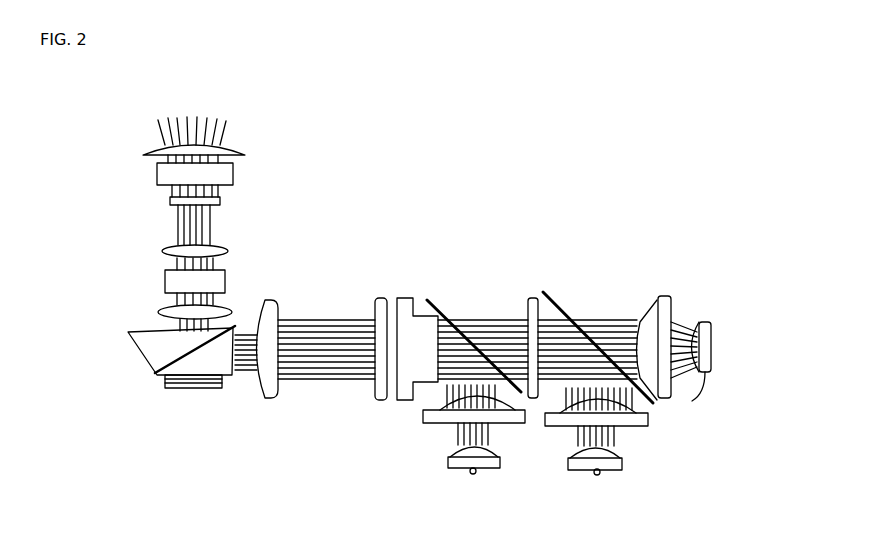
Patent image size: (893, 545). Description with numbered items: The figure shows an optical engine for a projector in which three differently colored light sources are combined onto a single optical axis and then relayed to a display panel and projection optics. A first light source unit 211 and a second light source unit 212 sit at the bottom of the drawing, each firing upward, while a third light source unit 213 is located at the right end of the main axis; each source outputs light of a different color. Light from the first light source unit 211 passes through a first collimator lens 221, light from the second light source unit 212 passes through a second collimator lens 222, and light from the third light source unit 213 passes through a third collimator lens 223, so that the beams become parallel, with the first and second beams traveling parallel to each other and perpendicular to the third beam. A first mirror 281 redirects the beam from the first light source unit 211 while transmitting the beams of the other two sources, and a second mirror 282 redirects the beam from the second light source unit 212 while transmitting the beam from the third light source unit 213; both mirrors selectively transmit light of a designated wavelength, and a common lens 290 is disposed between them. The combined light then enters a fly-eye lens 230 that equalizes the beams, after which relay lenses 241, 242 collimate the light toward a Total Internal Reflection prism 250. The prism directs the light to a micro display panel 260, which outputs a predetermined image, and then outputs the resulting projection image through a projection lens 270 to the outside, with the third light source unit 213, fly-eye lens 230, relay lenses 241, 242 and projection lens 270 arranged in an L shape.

The projection lens 270 is at (133, 103).
The Total Internal Reflection (TIR) prism 250 is at (142, 360).
The micro display panel 260 is at (192, 391).
The relay lens 242 is at (266, 299).
The relay lens 241 is at (374, 296).
The fly-eye lens 230 is at (398, 297).
The common lens 290 is at (535, 300).
The first mirror 281 is at (430, 297).
The second mirror 282 is at (543, 290).
The first collimator lens 221 is at (447, 462).
The first light source unit 211 is at (474, 475).
The second collimator lens 222 is at (567, 462).
The second light source unit 212 is at (600, 476).
The third collimator lens 223 is at (705, 378).
The third light source unit 213 is at (715, 346).